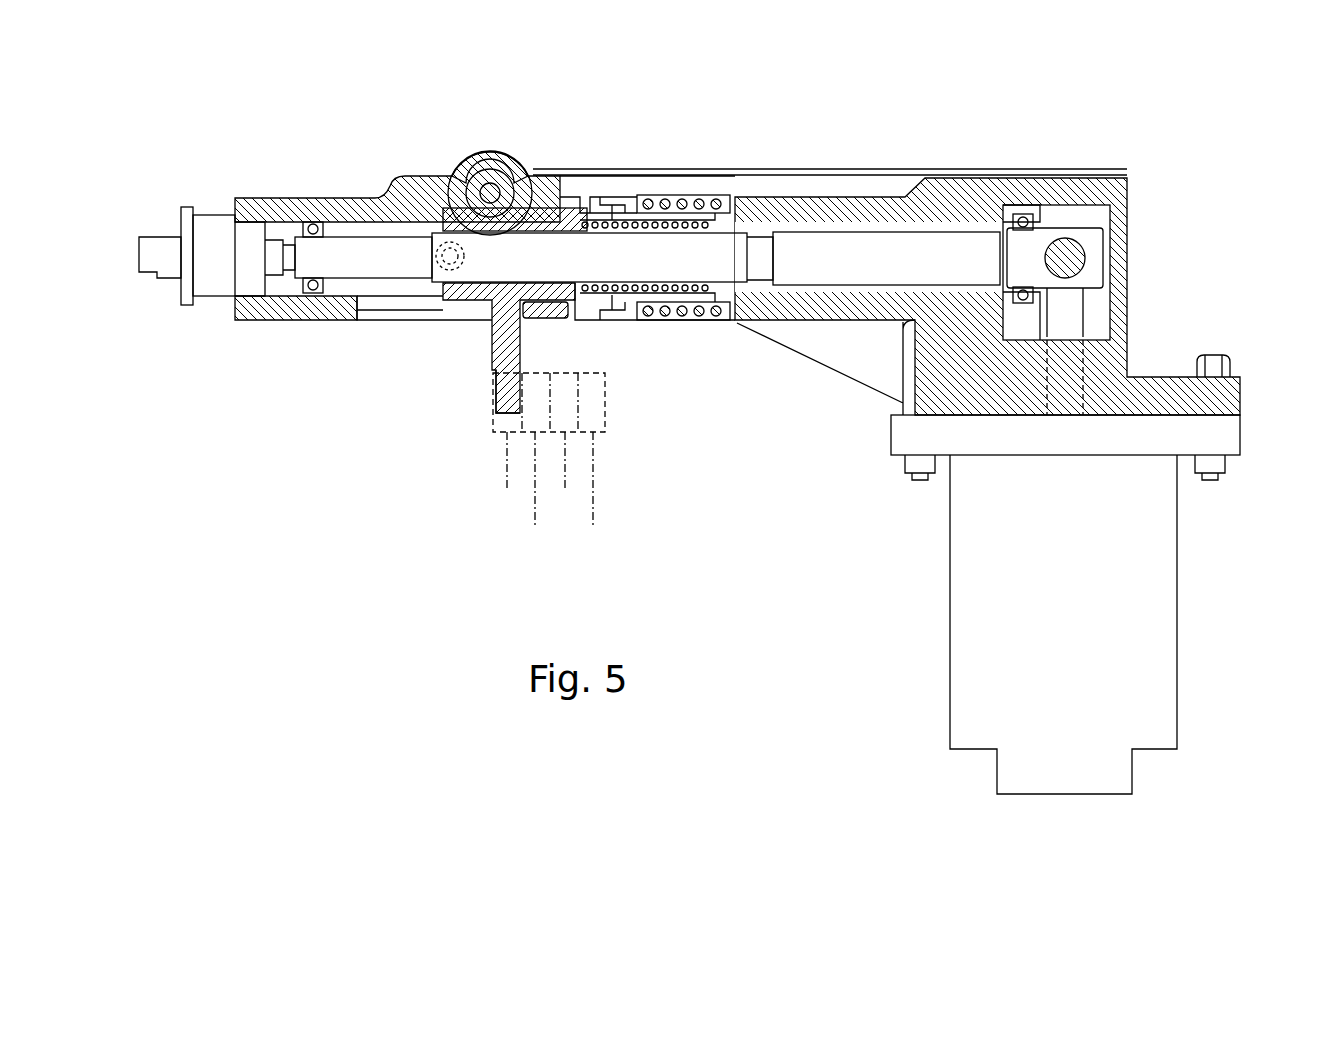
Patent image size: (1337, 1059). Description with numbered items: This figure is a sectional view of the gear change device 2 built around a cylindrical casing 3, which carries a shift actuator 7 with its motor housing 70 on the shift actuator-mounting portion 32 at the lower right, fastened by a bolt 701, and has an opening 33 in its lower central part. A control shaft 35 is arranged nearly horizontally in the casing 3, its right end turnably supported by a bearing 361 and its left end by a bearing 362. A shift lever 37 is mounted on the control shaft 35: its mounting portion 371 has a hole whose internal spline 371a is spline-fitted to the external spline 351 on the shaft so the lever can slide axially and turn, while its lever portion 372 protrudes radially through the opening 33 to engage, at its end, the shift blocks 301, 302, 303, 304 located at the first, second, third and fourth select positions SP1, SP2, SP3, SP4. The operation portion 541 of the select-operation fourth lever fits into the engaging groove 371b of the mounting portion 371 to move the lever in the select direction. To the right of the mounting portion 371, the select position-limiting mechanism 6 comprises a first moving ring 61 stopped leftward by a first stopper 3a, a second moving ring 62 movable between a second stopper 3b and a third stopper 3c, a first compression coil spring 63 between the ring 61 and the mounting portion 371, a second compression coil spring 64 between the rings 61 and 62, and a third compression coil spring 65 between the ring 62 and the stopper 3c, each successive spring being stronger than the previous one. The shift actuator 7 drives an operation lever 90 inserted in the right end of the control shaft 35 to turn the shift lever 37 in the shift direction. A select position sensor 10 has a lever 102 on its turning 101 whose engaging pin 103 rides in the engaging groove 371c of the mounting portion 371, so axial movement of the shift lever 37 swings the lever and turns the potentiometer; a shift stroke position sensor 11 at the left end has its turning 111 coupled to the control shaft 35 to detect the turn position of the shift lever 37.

The electric actuator 2 is at (917, 113).
The casing 3 is at (815, 193).
The first stopper 3a is at (600, 195).
The second stopper 3b is at (627, 200).
The third stopper 3c is at (737, 322).
The select position-limiting mechanism 6 is at (665, 211).
The shift actuator 7 is at (1074, 604).
The select position sensor 10 is at (466, 168).
The shift stroke position sensor 11 is at (212, 200).
The shift actuator-mounting portion 32 is at (1175, 388).
The opening 33 is at (455, 322).
The control shaft 35 is at (865, 245).
The shift lever 37 is at (490, 378).
The first moving ring 61 is at (617, 210).
The second moving ring 62 is at (683, 225).
The first compression coil spring 63 is at (612, 322).
The second compression coil spring 64 is at (675, 292).
The third compression coil spring 65 is at (705, 315).
The motor housing 70 is at (1185, 575).
The operation lever 90 is at (1075, 258).
The turning 101 is at (490, 190).
The lever 102 is at (462, 183).
The engaging pin 103 is at (448, 250).
The turning 111 is at (288, 236).
The shift block 301 is at (493, 425).
The shift block 302 is at (520, 432).
The shift block 303 is at (578, 395).
The shift block 304 is at (605, 432).
The external spline 351 is at (715, 240).
The bearing 361 is at (1023, 215).
The bearing 362 is at (313, 224).
The mounting portion 371 is at (572, 205).
The internal spline 371a is at (540, 215).
The engaging groove 371b is at (560, 212).
The engaging groove 371c is at (440, 300).
The lever portion 372 is at (497, 385).
The operation portion 541 is at (548, 318).
The bolt 701 is at (1230, 356).
The first select position SP1 is at (504, 476).
The second select position SP2 is at (534, 493).
The third select position SP3 is at (564, 476).
The fourth select position SP4 is at (604, 493).